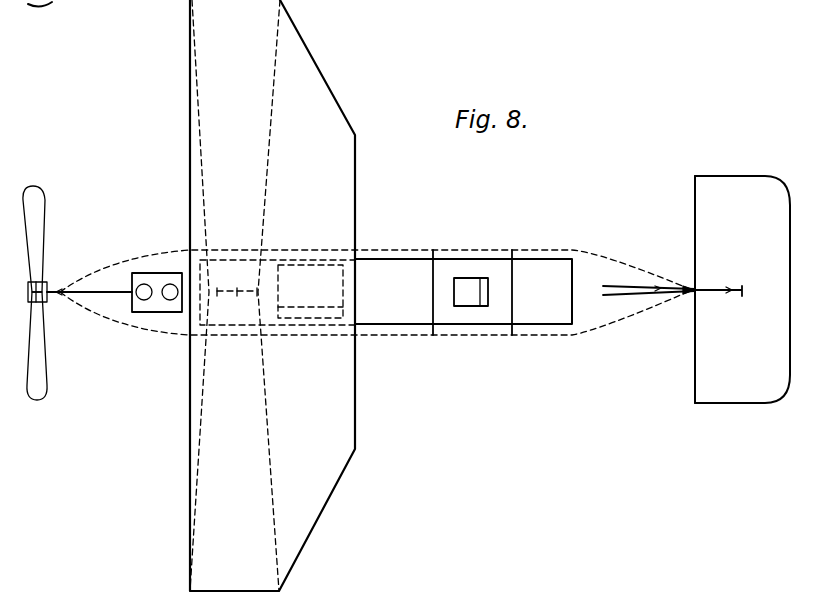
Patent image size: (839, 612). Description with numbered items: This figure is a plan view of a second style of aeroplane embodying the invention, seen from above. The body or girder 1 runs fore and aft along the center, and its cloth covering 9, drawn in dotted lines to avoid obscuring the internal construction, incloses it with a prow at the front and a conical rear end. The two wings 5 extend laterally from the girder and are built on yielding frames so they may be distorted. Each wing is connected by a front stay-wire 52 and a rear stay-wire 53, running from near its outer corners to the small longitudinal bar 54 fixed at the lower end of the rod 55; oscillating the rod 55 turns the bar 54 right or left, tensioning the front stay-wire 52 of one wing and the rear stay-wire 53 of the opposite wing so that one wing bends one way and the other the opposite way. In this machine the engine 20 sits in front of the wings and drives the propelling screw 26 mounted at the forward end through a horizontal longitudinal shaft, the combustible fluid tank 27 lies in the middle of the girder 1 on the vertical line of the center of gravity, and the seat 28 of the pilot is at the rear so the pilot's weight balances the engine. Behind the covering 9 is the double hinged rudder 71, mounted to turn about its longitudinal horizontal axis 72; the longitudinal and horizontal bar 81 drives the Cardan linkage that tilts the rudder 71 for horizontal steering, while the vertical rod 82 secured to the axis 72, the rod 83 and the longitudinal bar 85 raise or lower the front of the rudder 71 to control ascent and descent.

The body or girder 1 is at (397, 266).
The wings 5 is at (272, 295).
The cloth covering 9 is at (403, 338).
The engine 20 is at (156, 306).
The propelling screw 26 is at (37, 212).
The combustible fluid tank 27 is at (310, 291).
The seat of the pilot 28 is at (470, 288).
The front stay-wire 52 is at (203, 142).
The rear stay-wire 53 is at (272, 112).
The longitudinal bar 54 is at (245, 290).
The rod 55 is at (247, 292).
The double hinged rudder 71 is at (742, 289).
The longitudinal horizontal axis 72 is at (695, 250).
The longitudinal and horizontal bar 81 is at (621, 297).
The vertical rod 82 is at (729, 307).
The rod 83 is at (677, 293).
The longitudinal bar 85 is at (613, 286).